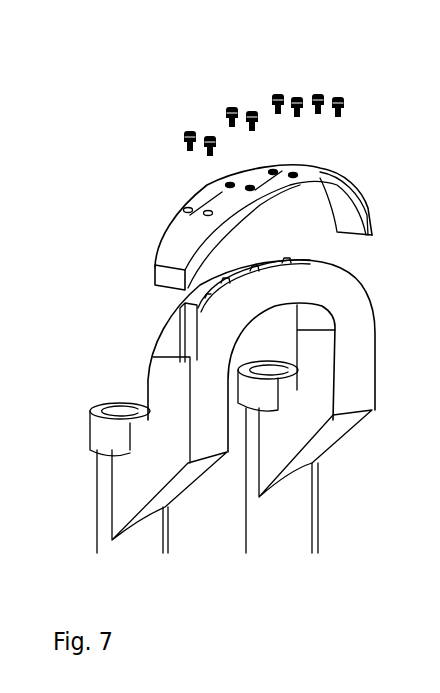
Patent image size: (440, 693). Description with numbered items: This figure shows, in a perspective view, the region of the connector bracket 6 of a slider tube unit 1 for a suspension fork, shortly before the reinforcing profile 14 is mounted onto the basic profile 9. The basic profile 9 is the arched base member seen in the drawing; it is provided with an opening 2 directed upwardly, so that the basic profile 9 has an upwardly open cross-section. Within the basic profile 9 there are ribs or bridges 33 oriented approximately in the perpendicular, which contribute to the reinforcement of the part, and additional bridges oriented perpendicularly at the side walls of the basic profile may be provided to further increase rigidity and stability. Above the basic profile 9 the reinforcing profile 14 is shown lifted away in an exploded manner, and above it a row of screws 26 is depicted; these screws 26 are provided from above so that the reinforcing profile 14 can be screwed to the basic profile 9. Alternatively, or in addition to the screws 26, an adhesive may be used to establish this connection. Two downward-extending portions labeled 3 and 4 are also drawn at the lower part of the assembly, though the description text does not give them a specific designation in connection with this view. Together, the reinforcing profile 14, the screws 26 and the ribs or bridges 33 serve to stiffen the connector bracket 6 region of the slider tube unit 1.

The slider tube unit 1 is at (88, 93).
The opening 2 is at (251, 268).
The left arm 3 is at (102, 537).
The right arm 4 is at (293, 537).
The connector bracket 6 is at (135, 265).
The basic profile 9 is at (348, 303).
The reinforcing profile 14 is at (178, 230).
The screws 26 is at (175, 123).
The ribs or bridges 33 is at (175, 320).